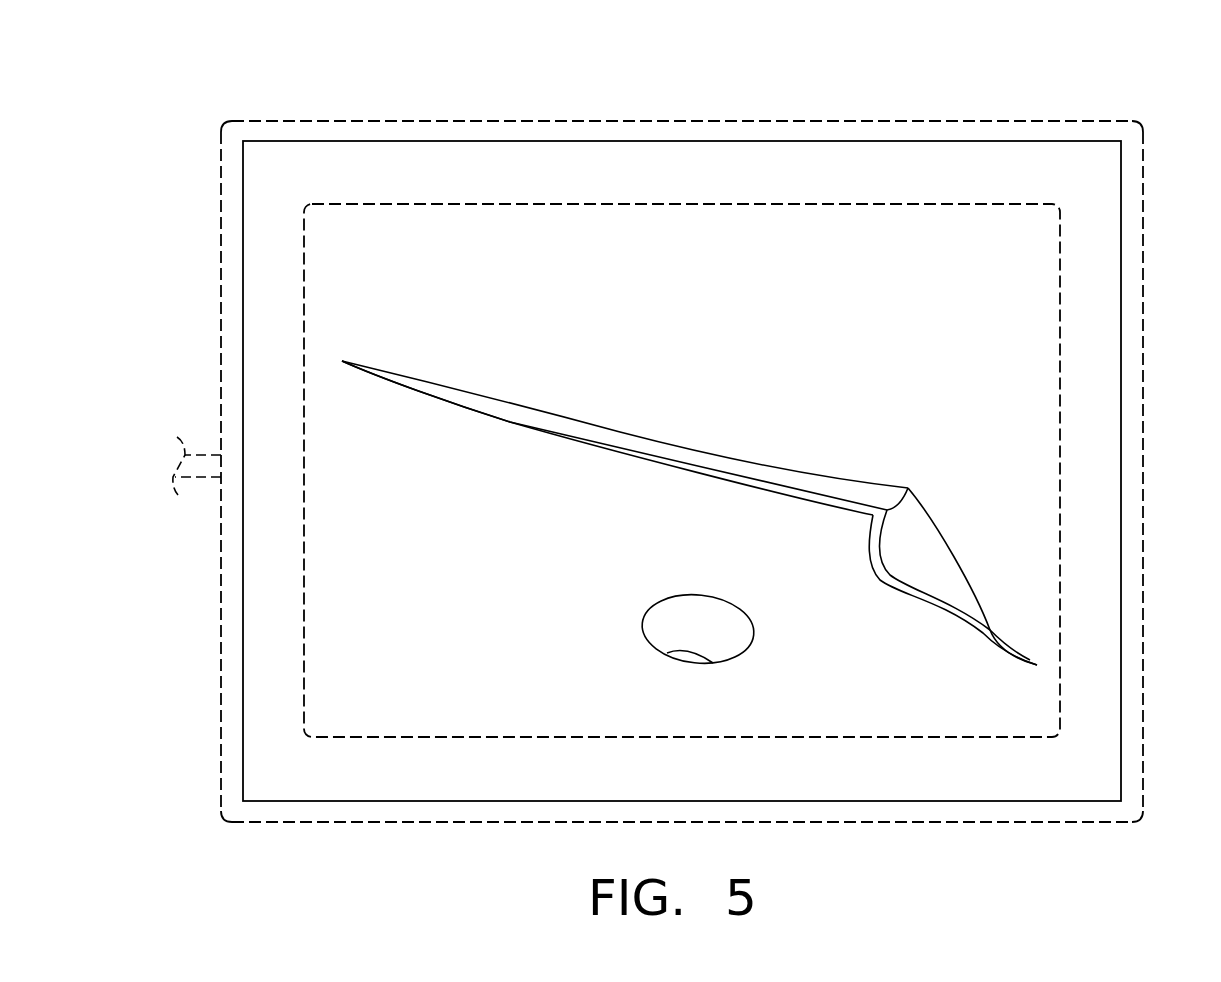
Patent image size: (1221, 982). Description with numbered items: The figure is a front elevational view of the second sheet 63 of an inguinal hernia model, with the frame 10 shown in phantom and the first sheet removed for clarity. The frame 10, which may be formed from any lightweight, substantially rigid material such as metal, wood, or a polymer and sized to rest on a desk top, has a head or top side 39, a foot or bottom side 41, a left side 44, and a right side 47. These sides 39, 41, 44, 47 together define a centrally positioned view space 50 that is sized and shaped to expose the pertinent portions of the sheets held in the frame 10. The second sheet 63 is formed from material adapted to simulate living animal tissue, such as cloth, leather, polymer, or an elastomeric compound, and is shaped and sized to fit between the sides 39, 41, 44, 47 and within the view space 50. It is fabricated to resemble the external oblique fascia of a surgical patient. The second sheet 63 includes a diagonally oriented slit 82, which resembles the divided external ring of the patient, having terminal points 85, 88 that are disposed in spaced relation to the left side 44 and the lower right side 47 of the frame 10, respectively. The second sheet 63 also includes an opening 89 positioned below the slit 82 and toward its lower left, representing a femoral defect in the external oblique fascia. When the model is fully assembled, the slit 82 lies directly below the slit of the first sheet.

The frame 10 is at (1162, 186).
The head or top side 39 is at (580, 121).
The foot or bottom side 41 is at (866, 818).
The right side 47 is at (220, 308).
The left side 44 is at (1137, 492).
The centrally positioned view space 50 is at (1058, 390).
The second sheet 63 is at (395, 675).
The diagonally oriented slit 82 is at (642, 468).
The terminal point 85 is at (342, 361).
The terminal point 88 is at (908, 488).
The opening 89 is at (670, 652).